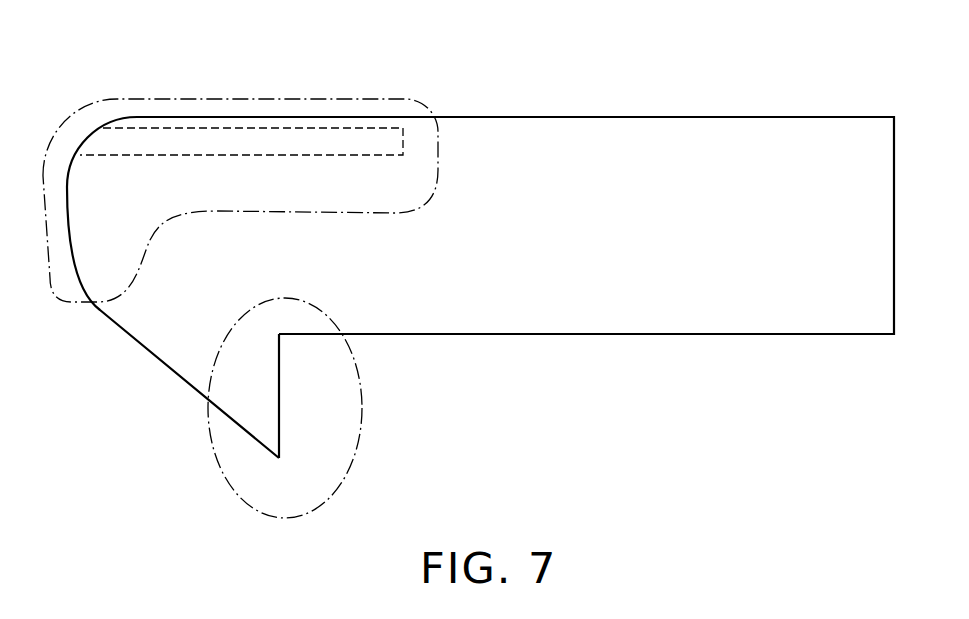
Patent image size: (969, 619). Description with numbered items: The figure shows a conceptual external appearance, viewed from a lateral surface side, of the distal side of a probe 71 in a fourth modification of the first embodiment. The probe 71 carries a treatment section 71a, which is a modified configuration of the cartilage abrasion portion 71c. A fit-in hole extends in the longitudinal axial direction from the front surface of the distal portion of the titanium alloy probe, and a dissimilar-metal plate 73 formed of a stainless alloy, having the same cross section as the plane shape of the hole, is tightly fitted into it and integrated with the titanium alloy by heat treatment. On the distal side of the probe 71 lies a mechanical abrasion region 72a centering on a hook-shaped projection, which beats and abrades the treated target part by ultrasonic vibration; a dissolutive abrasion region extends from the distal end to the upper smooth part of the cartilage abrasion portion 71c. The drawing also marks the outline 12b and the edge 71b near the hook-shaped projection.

The bent portion outline (phantom) 12b is at (166, 98).
The dissimilar-metal plate 73 is at (257, 127).
The probe 71 is at (879, 117).
The treatment section 71a is at (175, 391).
The end edge of notch 71b is at (280, 443).
The cartilage abrasion portion 71c is at (425, 128).
The mechanical abrasion region 72a is at (362, 397).